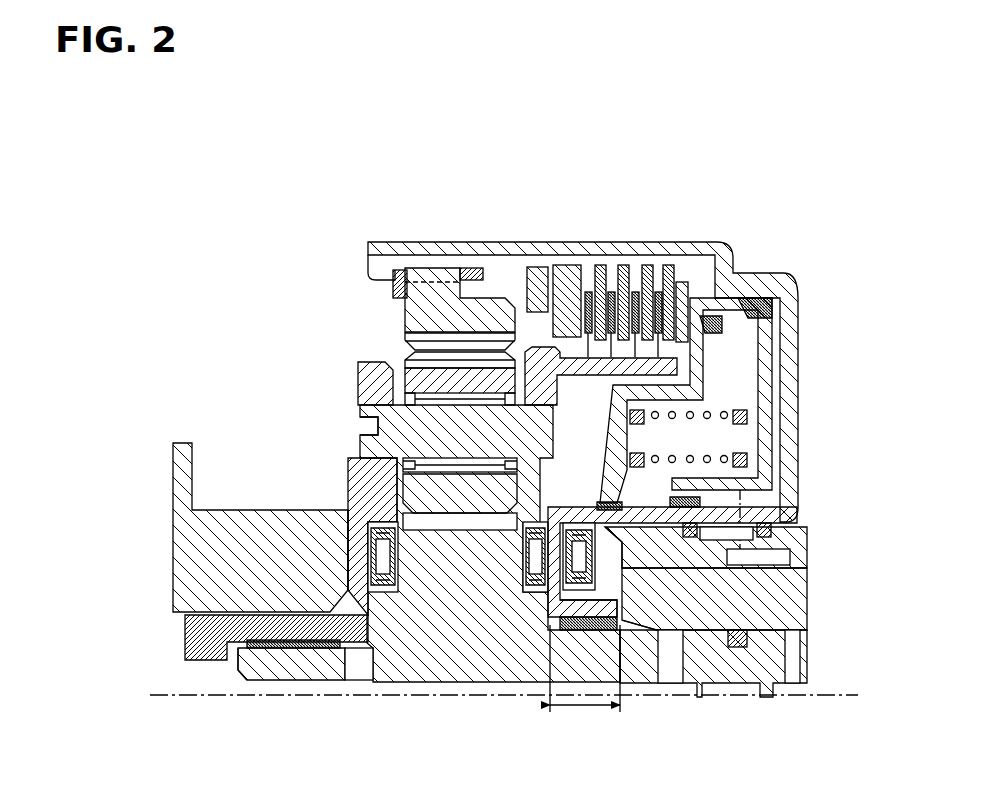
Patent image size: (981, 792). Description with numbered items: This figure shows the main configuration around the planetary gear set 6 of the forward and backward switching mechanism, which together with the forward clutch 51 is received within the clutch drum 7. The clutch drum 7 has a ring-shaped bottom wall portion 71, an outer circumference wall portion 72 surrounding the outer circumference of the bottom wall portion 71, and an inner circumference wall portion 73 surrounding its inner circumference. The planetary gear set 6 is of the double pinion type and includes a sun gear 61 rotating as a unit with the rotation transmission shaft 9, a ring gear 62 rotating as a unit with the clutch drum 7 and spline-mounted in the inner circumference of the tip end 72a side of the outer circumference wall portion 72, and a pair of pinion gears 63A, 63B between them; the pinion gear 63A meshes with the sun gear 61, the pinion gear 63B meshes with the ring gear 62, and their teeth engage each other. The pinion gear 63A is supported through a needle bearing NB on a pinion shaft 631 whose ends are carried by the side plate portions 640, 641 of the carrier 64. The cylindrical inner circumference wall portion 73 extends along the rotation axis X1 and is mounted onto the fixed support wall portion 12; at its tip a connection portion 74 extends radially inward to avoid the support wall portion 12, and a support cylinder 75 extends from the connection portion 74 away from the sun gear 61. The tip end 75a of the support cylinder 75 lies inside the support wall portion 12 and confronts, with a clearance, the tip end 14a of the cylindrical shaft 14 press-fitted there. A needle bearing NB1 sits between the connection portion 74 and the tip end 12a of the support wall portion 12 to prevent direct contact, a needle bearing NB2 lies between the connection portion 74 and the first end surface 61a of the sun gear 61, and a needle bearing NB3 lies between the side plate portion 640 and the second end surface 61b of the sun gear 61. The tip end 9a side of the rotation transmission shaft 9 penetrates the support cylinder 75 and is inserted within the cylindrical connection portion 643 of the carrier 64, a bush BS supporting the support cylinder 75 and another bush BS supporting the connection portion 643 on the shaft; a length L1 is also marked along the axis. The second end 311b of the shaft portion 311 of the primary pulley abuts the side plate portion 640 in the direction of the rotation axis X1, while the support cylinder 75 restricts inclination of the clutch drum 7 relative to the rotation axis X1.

The clutch drum 7 is at (580, 355).
The outer circumference wall portion 72 is at (583, 254).
The tip end of outer circumference wall portion 72a is at (368, 250).
The bottom wall portion 71 is at (799, 335).
The forward clutch 51 is at (654, 254).
The planetary gear set 6 is at (252, 290).
The ring gear 62 is at (398, 322).
The pinion gear 63B is at (396, 352).
The pinion gear 63A is at (356, 382).
The carrier 64 is at (354, 402).
The side plate portion 640 is at (348, 488).
The pinion shaft 631 is at (378, 428).
The sun gear 61 is at (436, 543).
The first end surface of sun gear 61a is at (482, 641).
The hub portion 61b is at (397, 608).
The connection portion 74 is at (535, 546).
The needle bearing NB is at (460, 470).
The needle bearing NB1 is at (608, 520).
The needle bearing NB2 is at (532, 560).
The needle bearing NB3 is at (390, 562).
The side plate portion 641 is at (548, 478).
The support cylinder 75 is at (631, 565).
The tip end of support cylinder 75a is at (621, 620).
The inner circumference wall portion 73 is at (755, 513).
The support wall portion 12 is at (728, 548).
The tip end of support wall portion 12a is at (596, 560).
The cylindrical shaft 14 is at (742, 599).
The tip end of cylindrical shaft 14a is at (650, 582).
The rotation transmission shaft 9 is at (523, 680).
The tip end of rotation transmission shaft 9a is at (238, 664).
The shaft portion 311 is at (227, 527).
The second end of shaft portion 311b is at (302, 550).
The connection portion 643 is at (273, 622).
The bush BS is at (290, 652).
The length L1 is at (585, 681).
The rotation axis X1 is at (524, 704).